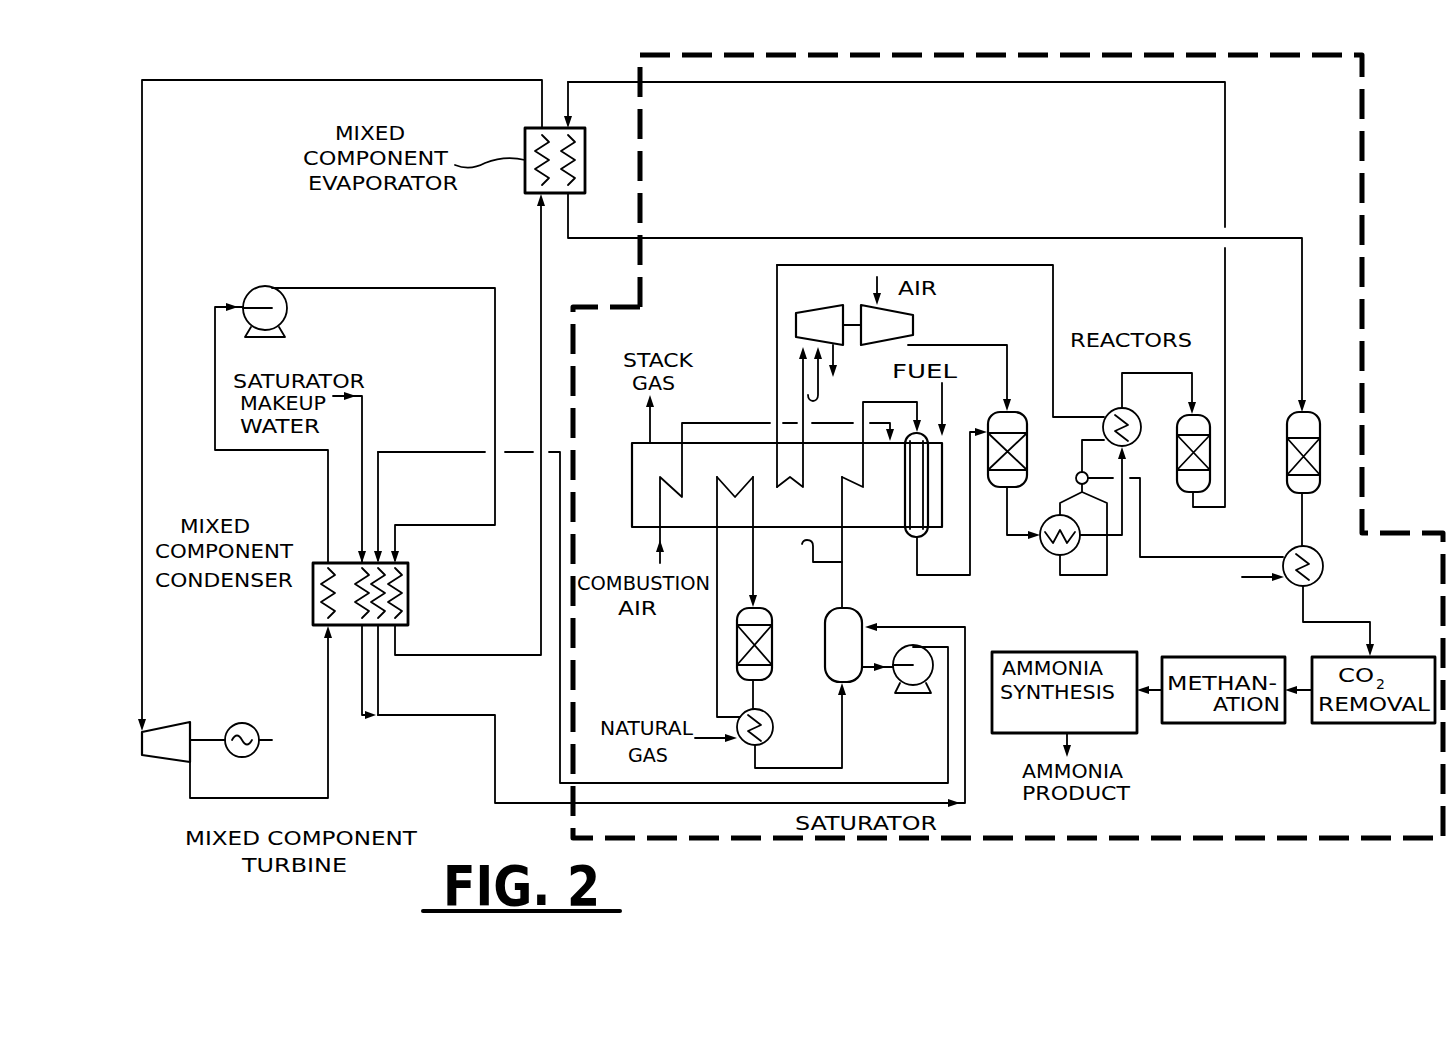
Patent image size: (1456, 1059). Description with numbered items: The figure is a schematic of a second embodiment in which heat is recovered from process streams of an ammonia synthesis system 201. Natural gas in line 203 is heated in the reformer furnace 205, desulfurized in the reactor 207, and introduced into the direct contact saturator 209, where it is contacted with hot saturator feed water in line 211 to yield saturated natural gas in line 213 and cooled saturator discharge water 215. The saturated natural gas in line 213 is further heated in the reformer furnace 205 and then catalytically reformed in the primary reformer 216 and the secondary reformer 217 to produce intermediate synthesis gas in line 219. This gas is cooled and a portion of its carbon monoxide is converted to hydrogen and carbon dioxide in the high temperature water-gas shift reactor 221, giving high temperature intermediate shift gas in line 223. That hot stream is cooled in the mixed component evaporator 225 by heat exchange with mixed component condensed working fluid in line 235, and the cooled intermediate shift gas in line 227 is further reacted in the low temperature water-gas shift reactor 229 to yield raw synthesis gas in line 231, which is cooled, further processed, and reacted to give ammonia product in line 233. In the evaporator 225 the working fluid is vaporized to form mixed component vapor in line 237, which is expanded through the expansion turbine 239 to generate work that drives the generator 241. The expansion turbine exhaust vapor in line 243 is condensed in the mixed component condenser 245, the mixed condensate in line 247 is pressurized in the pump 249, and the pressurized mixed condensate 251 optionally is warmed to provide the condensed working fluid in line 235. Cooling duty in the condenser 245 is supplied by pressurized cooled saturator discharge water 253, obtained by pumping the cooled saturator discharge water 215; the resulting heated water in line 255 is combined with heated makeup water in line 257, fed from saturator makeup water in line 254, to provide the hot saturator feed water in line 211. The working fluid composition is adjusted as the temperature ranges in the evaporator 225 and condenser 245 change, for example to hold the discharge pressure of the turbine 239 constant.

The ammonia synthesis system 201 is at (1382, 214).
The natural gas line 203 is at (713, 742).
The reformer furnace 205 is at (632, 456).
The desulfurization reactor 207 is at (717, 645).
The direct contact saturator 209 is at (823, 653).
The hot saturator feed water line 211 is at (497, 737).
The saturated natural gas line 213 is at (842, 572).
The cooled saturator discharge water 215 is at (873, 674).
The primary reformer 216 is at (906, 496).
The secondary reformer 217 is at (1041, 467).
The intermediate synthesis gas line 219 is at (998, 527).
The high temperature water-gas shift reactor 221 is at (1173, 491).
The high temperature intermediate shift gas line 223 is at (1228, 318).
The mixed component evaporator 225 is at (593, 136).
The cooled intermediate shift gas line 227 is at (1270, 238).
The low temperature water-gas shift reactor 229 is at (1287, 418).
The raw synthesis gas line 231 is at (1300, 522).
The ammonia product line 233 is at (1070, 740).
The mixed component condensed working fluid line 235 is at (541, 236).
The mixed component vapor line 237 is at (245, 82).
The expansion turbine 239 is at (174, 722).
The generator 241 is at (272, 740).
The expansion turbine exhaust vapor line 243 is at (330, 757).
The mixed component condenser 245 is at (313, 597).
The mixed condensate line 247 is at (239, 451).
The pump 249 is at (283, 251).
The pressurized mixed condensate 251 is at (440, 288).
The pressurized cooled saturator discharge water 253 is at (435, 453).
The saturator makeup water line 254 is at (364, 424).
The heated water line 255 is at (380, 685).
The heated makeup water line 257 is at (362, 668).